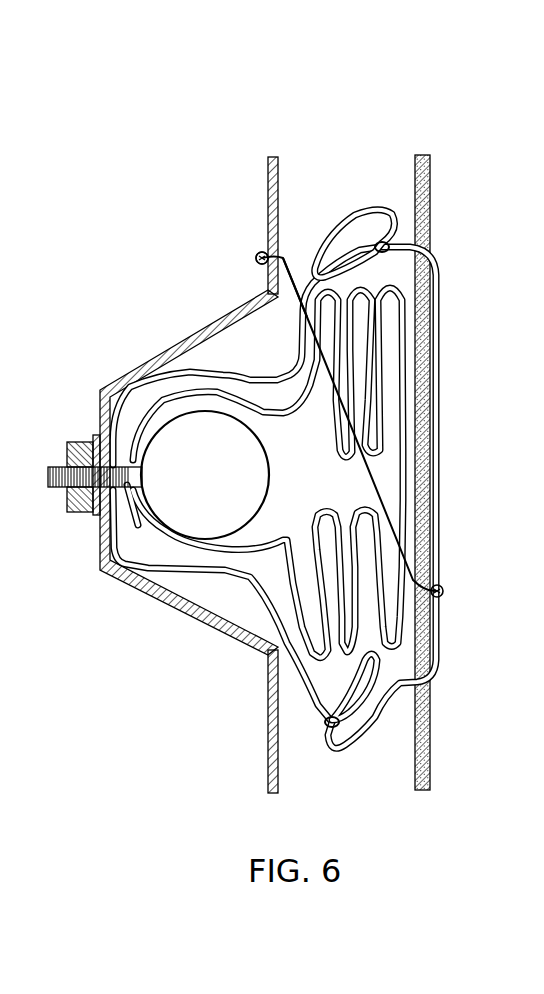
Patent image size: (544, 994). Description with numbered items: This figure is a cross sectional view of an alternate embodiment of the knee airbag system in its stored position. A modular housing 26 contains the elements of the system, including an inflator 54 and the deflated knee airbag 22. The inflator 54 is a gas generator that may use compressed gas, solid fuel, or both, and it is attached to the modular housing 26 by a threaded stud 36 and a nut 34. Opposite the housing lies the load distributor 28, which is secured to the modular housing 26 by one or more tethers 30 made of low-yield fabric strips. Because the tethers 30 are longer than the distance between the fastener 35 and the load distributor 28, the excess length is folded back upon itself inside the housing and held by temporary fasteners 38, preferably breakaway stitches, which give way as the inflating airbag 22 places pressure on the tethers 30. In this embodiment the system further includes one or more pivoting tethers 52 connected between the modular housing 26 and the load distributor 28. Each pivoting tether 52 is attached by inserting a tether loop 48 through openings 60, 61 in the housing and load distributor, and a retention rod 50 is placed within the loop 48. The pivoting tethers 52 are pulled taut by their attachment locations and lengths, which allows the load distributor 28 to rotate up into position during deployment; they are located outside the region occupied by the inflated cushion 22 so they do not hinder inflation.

The knee airbag 22 is at (328, 455).
The modular housing 26 is at (182, 610).
The load distributor 28 is at (432, 770).
The tether 30 is at (274, 476).
The nut 34 is at (78, 440).
The fastener 35 is at (48, 442).
The threaded stud 36 is at (60, 488).
The temporary fastener 38 is at (380, 240).
The tether loop 48 is at (256, 263).
The retention rod 50 is at (257, 253).
The pivoting tether 52 is at (362, 478).
The inflator 54 is at (214, 485).
The opening 60 is at (444, 590).
The opening 61 is at (286, 257).